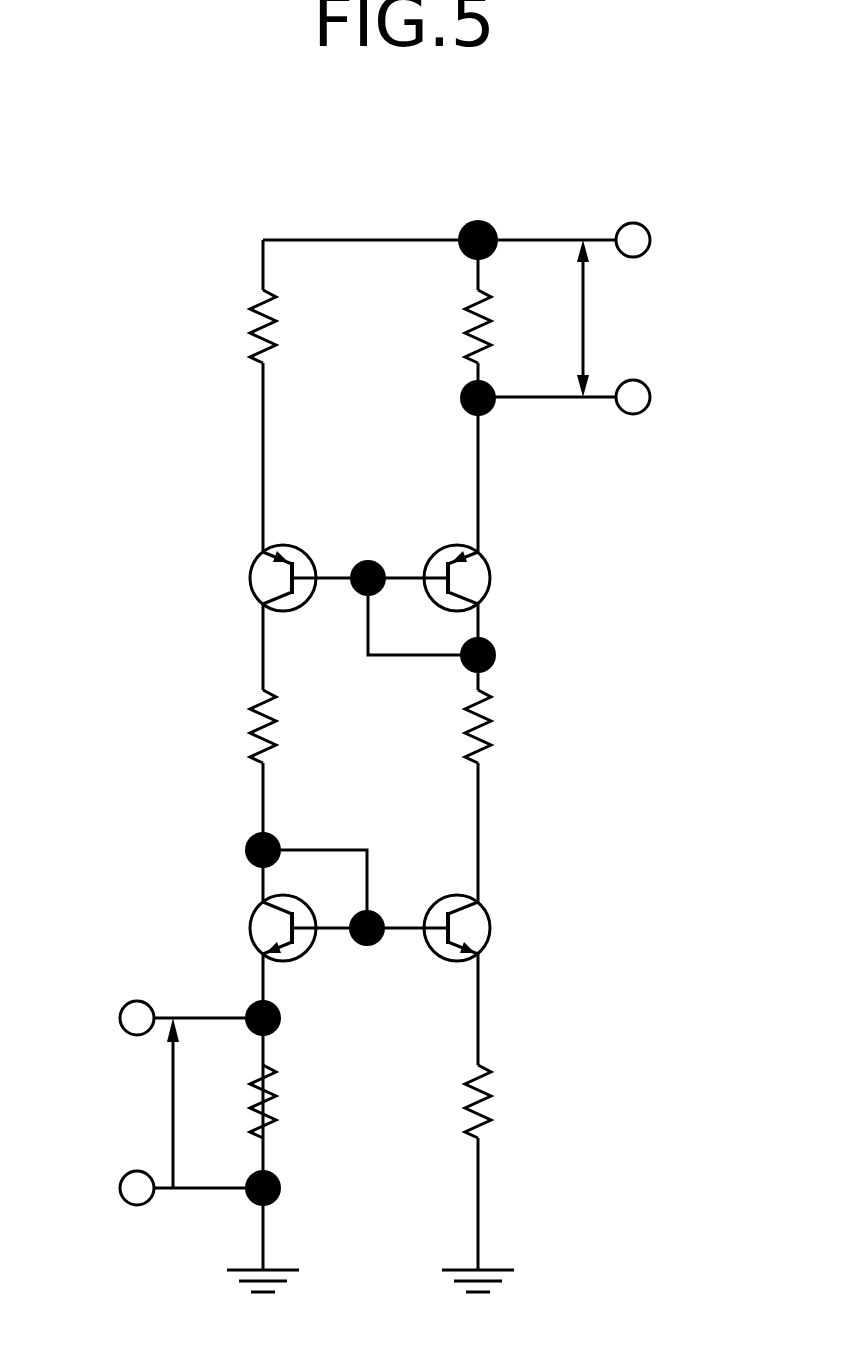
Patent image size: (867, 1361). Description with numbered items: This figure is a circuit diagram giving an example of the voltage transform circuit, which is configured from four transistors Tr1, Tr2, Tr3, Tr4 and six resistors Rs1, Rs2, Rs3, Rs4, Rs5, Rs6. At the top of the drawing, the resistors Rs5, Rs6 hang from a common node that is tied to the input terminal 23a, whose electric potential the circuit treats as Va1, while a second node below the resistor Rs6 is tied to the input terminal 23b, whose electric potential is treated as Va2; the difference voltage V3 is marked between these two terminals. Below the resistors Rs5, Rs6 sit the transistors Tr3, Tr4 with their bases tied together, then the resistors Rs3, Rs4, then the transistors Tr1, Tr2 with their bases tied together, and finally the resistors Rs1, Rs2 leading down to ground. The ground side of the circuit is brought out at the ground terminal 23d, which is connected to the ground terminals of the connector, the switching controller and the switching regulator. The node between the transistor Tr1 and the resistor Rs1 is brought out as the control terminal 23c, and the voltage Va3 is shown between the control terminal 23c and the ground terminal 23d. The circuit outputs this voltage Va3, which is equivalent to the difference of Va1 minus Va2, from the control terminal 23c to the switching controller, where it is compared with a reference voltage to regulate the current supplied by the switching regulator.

The input terminal 23a is at (637, 222).
The input terminal 23b is at (633, 415).
The control terminal 23c is at (137, 1000).
The ground (GND) terminal 23d is at (137, 1206).
The resistor Rs1 is at (272, 1093).
The resistor Rs2 is at (482, 1068).
The resistor Rs3 is at (272, 710).
The resistor Rs4 is at (482, 710).
The resistor Rs5 is at (260, 300).
The resistor Rs6 is at (473, 307).
The transistor Tr1 is at (255, 913).
The transistor Tr2 is at (482, 897).
The transistor Tr3 is at (257, 563).
The transistor Tr4 is at (482, 556).
The difference voltage V3 is at (559, 318).
The electric potential of the input terminal Va1 is at (688, 238).
The electric potential of the input terminal Va2 is at (688, 395).
The output voltage Va3 is at (146, 1103).